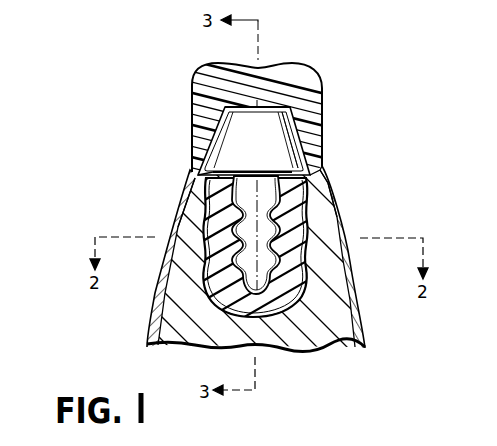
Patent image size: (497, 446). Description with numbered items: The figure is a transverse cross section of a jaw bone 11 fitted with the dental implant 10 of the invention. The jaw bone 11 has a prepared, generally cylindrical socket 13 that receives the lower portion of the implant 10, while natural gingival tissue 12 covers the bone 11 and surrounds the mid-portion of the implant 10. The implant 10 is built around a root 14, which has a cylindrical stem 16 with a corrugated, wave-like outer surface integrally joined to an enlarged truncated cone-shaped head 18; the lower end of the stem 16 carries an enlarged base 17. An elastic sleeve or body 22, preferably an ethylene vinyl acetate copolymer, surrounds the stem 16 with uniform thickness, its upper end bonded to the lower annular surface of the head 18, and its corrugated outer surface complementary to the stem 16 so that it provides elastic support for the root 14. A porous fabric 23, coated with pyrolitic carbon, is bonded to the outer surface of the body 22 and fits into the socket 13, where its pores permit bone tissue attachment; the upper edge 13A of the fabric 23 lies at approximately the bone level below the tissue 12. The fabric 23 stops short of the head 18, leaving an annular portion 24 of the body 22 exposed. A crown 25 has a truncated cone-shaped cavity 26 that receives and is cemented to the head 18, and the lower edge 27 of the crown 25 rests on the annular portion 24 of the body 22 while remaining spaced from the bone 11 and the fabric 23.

The dental implant 10 is at (333, 73).
The jaw bone 11 is at (318, 328).
The gingiva 12 is at (340, 214).
The socket 13 is at (178, 287).
The upper edge of fabric 13A is at (310, 194).
The root 14 is at (239, 157).
The stem 16 is at (175, 199).
The base 17 is at (253, 285).
The head 18 is at (280, 137).
The body 22 is at (288, 260).
The fabric 23 is at (300, 238).
The annular portion 24 is at (305, 186).
The crown 25 is at (203, 86).
The cavity 26 is at (240, 105).
The lower edge of crown 27 is at (200, 169).